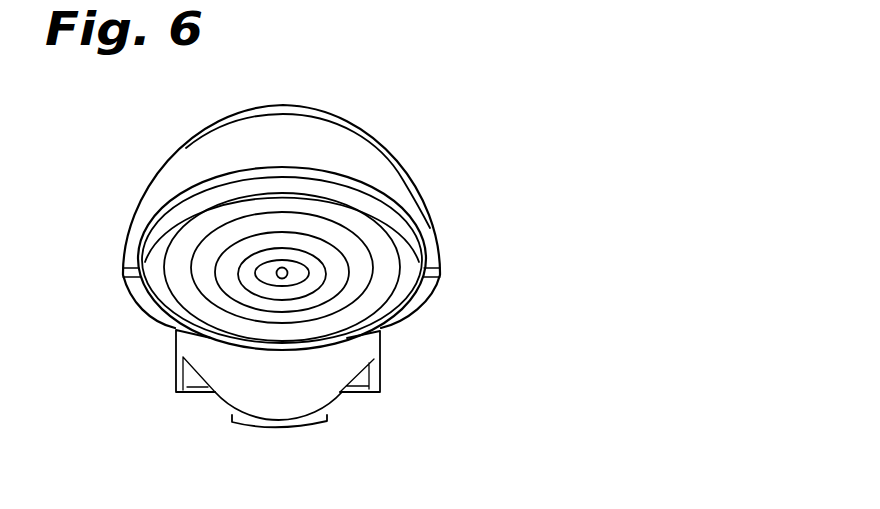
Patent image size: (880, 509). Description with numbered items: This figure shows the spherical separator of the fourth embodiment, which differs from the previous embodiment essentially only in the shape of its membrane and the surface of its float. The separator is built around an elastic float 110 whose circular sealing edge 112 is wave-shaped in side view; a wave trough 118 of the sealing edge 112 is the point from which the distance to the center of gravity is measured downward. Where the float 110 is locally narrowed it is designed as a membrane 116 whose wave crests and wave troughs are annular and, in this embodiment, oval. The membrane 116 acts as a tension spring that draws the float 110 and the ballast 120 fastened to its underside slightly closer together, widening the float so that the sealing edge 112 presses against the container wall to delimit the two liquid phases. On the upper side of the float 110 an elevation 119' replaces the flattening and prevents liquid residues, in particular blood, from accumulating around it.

The elastic float 110 is at (368, 164).
The sealing edge 112 is at (405, 232).
The membrane 116 is at (343, 272).
The wave trough 118 is at (212, 266).
The elevation 119' is at (364, 168).
The ballast 120 is at (348, 353).